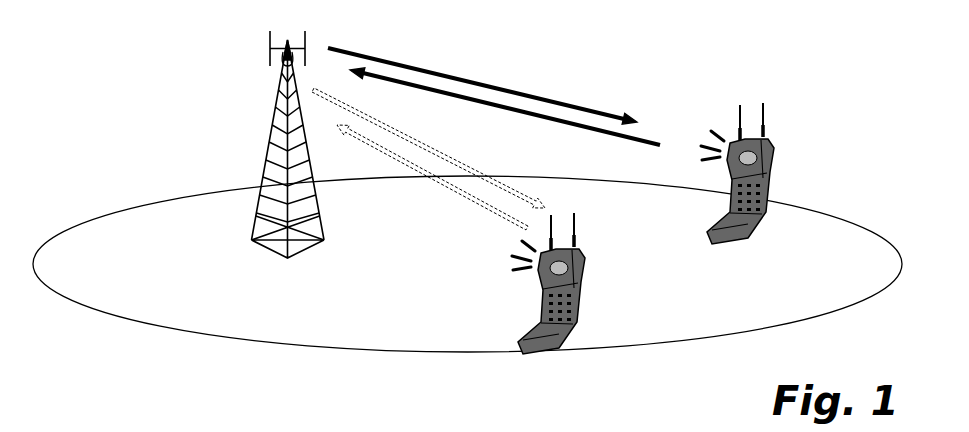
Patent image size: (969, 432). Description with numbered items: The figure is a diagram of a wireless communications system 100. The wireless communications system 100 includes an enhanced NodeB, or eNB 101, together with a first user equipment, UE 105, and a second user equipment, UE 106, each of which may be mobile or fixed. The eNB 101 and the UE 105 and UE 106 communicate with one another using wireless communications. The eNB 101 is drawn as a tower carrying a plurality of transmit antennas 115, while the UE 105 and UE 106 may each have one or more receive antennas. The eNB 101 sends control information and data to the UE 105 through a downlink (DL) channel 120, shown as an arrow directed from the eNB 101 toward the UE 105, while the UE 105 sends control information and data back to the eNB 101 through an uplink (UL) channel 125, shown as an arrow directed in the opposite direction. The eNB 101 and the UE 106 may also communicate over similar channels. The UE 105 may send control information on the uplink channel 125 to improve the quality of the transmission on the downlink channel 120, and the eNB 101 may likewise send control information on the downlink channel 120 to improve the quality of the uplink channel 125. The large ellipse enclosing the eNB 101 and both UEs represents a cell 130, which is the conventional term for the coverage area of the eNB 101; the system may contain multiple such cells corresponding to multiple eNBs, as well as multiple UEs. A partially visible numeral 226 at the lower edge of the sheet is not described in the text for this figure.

The wireless communications system 100 is at (97, 15).
The enhanced NodeB (eNB) 101 is at (264, 165).
The transmit antennas 115 is at (261, 39).
The downlink (DL) channel 120 is at (482, 81).
The uplink (UL) channel 125 is at (505, 109).
The user equipment (UE) 105 is at (775, 185).
The user equipment (UE) 106 is at (585, 295).
The cell 130 is at (467, 264).
The partial numeral (adjacent sheet) 226 is at (458, 426).